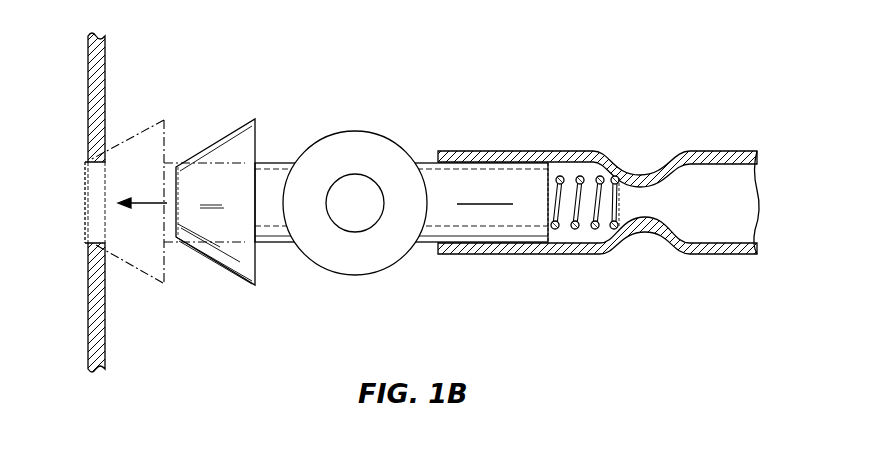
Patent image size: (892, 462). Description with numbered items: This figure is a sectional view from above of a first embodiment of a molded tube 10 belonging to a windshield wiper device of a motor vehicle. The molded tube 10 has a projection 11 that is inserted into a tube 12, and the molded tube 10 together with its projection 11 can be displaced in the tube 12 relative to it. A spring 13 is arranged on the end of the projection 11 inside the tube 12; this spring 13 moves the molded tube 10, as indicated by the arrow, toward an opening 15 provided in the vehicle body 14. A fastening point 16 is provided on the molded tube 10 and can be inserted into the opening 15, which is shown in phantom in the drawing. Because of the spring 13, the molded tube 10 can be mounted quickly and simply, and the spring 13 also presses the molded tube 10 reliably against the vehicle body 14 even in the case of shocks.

The molded tube 10 is at (353, 147).
The projection 11 is at (473, 187).
The tube 12 is at (723, 155).
The spring 13 is at (580, 178).
The vehicle body 14 is at (100, 303).
The opening 15 is at (107, 172).
The fastening point 16 is at (173, 137).